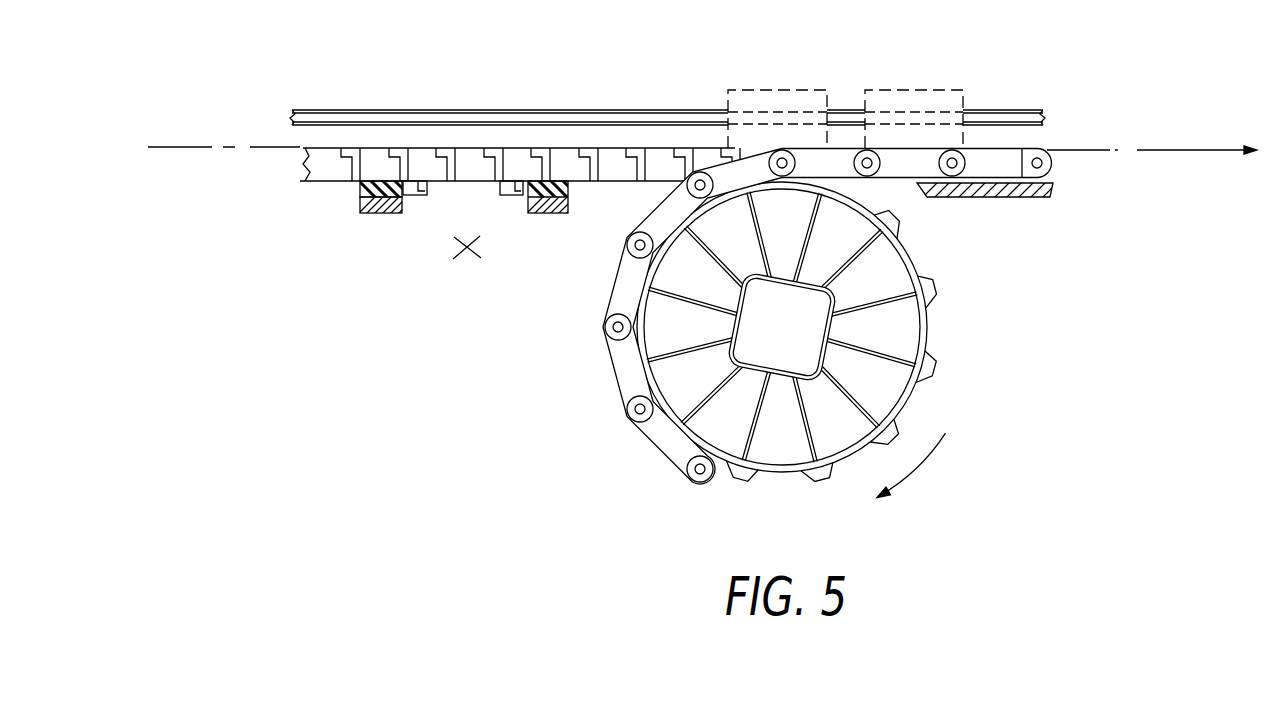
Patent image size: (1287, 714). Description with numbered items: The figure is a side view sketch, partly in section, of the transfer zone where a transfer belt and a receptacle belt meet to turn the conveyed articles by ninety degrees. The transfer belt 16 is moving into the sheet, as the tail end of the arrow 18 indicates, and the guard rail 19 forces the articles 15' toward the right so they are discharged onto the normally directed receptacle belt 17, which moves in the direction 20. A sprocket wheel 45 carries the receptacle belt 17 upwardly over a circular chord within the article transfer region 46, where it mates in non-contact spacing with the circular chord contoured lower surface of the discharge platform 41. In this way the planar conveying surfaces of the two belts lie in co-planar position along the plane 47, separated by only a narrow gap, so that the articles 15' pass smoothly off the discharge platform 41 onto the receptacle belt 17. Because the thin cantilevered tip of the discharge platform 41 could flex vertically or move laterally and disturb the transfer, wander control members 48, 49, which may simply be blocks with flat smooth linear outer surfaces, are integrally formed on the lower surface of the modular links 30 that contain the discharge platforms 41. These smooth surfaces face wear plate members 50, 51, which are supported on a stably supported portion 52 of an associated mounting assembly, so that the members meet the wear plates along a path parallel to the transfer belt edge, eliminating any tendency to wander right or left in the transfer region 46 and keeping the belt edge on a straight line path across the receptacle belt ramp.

The articles 15' is at (845, 87).
The transfer belt 16 is at (305, 165).
The receptacle belt 17 is at (1052, 170).
The arrow 18 is at (460, 250).
The guard rail 19 is at (534, 110).
The direction of movement 20 is at (1195, 150).
The modular links 30 is at (487, 172).
The discharge platform 41 is at (190, 147).
The sprocket wheel 45 is at (940, 287).
The article transfer region 46 is at (652, 194).
The plane 47 is at (1085, 150).
The wander control member 48 is at (420, 195).
The wander control member 49 is at (512, 197).
The wear plate member 50 is at (360, 186).
The wear plate member 51 is at (568, 192).
The stably supported portion 52 is at (358, 214).